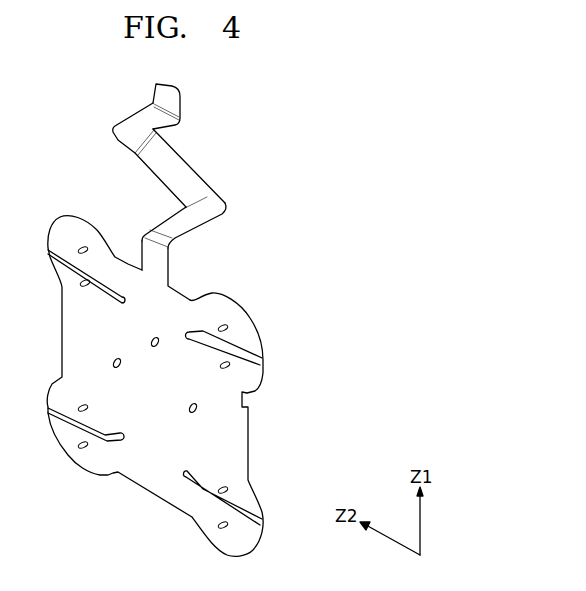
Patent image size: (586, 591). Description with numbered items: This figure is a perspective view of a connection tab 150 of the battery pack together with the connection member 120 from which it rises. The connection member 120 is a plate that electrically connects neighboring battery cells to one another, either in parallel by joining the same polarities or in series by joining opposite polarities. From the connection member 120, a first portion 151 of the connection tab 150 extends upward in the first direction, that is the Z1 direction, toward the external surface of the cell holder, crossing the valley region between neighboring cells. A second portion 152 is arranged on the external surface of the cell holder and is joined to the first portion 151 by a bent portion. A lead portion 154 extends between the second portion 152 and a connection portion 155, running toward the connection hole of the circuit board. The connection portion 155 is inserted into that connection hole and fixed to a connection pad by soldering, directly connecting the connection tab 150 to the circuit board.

The connection member 120 is at (157, 467).
The connection tab 150 is at (305, 117).
The first portion 151 is at (160, 263).
The second portion 152 is at (210, 213).
The lead portion 154 is at (178, 168).
The connection portion 155 is at (177, 103).